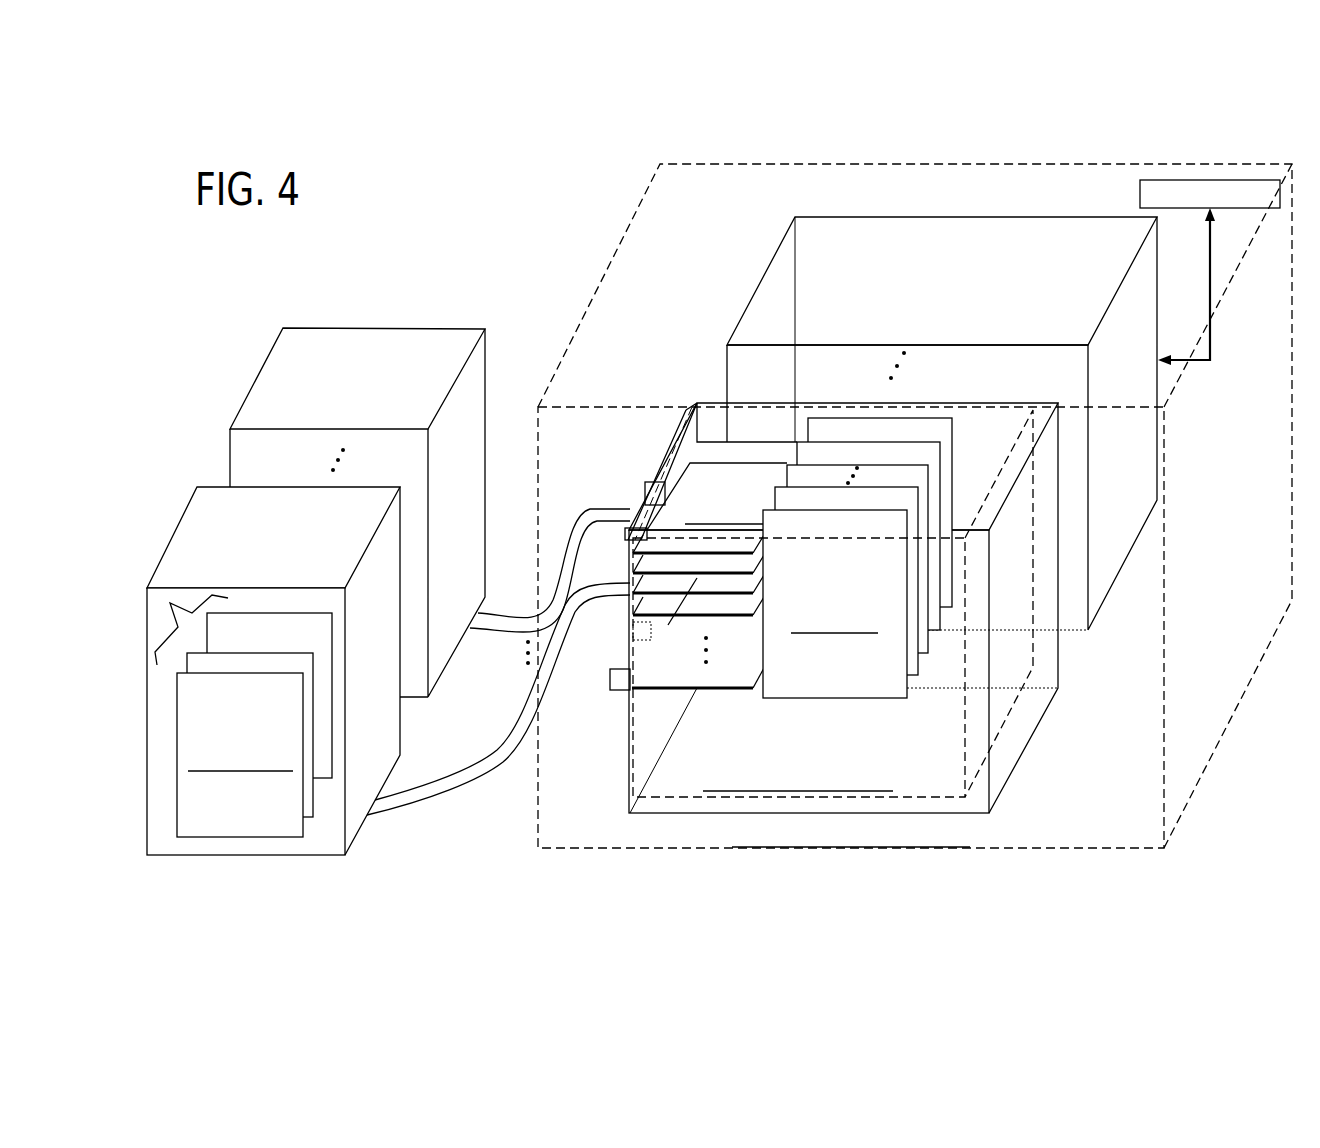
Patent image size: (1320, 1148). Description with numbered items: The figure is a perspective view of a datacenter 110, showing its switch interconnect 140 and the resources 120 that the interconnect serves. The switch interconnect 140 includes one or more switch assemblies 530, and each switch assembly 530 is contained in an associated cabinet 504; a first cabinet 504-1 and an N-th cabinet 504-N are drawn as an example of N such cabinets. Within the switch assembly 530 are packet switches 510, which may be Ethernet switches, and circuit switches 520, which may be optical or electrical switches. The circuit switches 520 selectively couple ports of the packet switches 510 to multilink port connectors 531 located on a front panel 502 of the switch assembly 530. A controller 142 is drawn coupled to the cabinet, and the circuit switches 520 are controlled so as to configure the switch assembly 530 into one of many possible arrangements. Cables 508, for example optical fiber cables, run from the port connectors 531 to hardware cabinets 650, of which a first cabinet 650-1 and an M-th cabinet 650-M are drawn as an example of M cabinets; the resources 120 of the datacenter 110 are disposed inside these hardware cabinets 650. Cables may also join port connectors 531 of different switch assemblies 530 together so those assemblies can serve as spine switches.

The datacenter 110 is at (1010, 124).
The switch interconnect 140 is at (980, 163).
The controller 142 is at (1212, 180).
The cabinet 504 is at (895, 217).
The cabinet 504-N is at (1025, 217).
The cabinet 504-1 is at (690, 410).
The multilink port connector 531 is at (643, 502).
The hardware cabinet 650 is at (273, 350).
The hardware cabinet 650-M is at (257, 375).
The hardware cabinet 650-1 is at (187, 513).
The resource 120 is at (182, 588).
The cable 508 is at (505, 627).
The front panel 502 is at (620, 660).
The circuit switch 520 is at (700, 690).
The packet switch 510 is at (927, 653).
The switch assembly 530 is at (1004, 732).